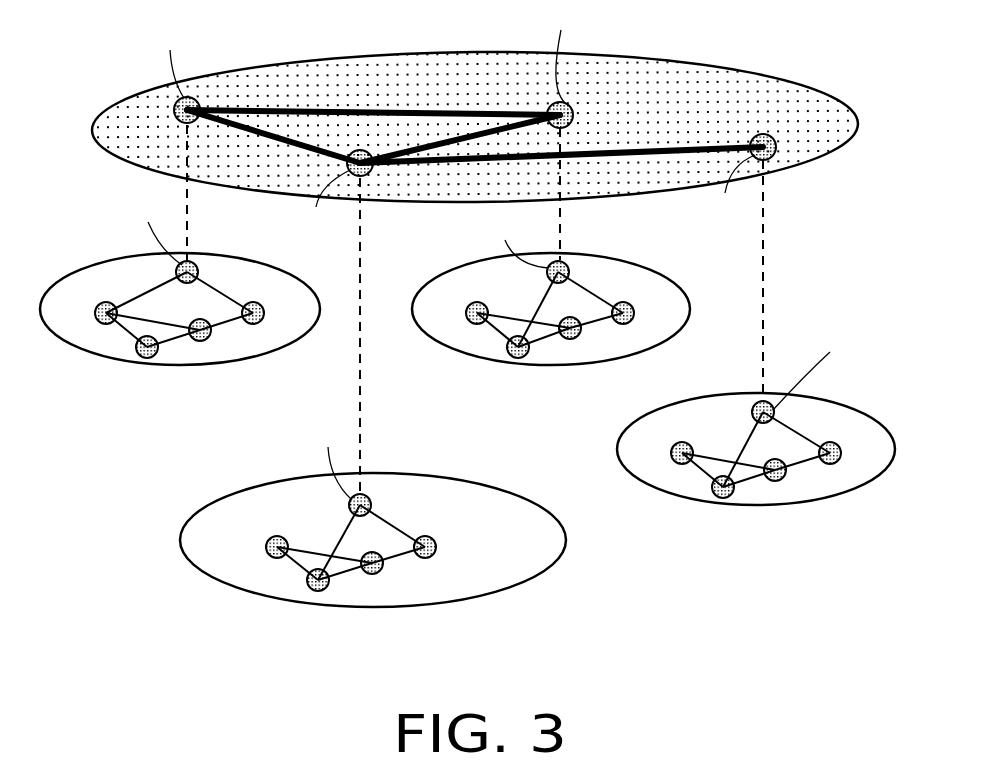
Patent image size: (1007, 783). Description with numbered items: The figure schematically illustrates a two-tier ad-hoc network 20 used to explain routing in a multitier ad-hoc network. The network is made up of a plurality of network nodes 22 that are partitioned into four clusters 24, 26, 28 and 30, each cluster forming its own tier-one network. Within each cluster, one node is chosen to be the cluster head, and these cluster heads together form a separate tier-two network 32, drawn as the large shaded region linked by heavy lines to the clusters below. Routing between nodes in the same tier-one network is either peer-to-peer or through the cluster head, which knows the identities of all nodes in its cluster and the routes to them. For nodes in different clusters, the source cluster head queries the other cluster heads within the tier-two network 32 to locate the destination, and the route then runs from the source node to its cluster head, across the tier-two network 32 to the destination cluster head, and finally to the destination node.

The two-tier ad-hoc network 20 is at (476, 319).
The network nodes 22 is at (148, 336).
The cluster 24 is at (192, 300).
The cluster 26 is at (200, 538).
The cluster 28 is at (850, 418).
The cluster 30 is at (640, 277).
The tier-2 network 32 is at (787, 103).